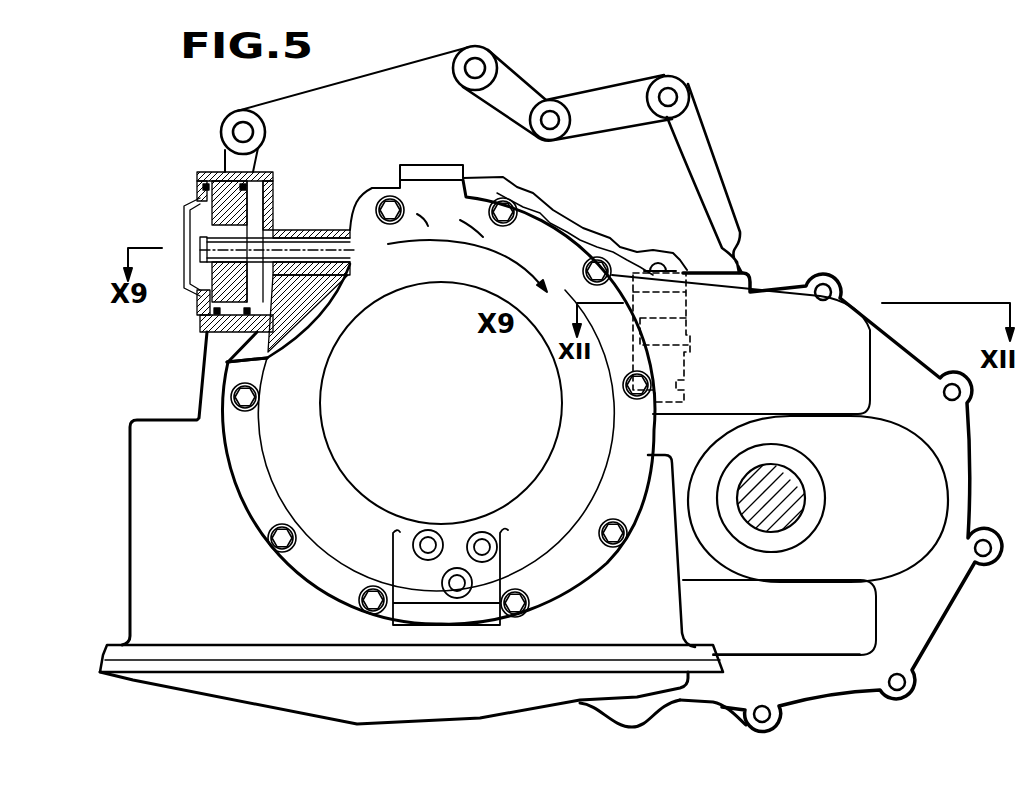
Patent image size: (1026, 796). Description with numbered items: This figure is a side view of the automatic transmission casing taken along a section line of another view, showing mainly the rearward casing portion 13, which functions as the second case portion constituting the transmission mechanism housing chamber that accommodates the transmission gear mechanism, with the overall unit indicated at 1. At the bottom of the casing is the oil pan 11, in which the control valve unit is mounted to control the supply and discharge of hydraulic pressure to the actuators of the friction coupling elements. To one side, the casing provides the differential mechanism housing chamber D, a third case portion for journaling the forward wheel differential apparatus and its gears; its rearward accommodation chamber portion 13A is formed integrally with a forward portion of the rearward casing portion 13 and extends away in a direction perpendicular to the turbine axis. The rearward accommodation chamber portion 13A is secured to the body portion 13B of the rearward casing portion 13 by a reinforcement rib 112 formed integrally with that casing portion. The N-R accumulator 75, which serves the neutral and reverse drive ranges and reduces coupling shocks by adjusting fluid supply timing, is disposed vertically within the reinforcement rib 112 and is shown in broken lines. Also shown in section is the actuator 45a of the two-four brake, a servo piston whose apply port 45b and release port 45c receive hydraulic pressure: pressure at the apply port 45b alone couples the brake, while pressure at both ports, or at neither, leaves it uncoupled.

The power unit 1 is at (841, 202).
The oil pan 11 is at (498, 688).
The rearward casing portion 13 is at (731, 752).
The rearward accommodation chamber portion 13A is at (800, 613).
The body portion 13B is at (605, 617).
The actuator 45a is at (210, 165).
The apply port 45b is at (230, 333).
The release port 45c is at (226, 361).
The N-R accumulator 75 is at (672, 304).
The reinforcement rib 112 is at (836, 402).
The differential mechanism housing chamber D is at (950, 481).